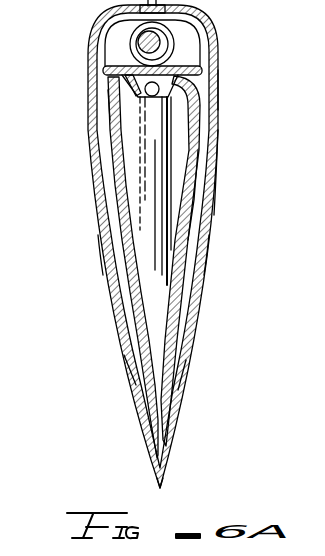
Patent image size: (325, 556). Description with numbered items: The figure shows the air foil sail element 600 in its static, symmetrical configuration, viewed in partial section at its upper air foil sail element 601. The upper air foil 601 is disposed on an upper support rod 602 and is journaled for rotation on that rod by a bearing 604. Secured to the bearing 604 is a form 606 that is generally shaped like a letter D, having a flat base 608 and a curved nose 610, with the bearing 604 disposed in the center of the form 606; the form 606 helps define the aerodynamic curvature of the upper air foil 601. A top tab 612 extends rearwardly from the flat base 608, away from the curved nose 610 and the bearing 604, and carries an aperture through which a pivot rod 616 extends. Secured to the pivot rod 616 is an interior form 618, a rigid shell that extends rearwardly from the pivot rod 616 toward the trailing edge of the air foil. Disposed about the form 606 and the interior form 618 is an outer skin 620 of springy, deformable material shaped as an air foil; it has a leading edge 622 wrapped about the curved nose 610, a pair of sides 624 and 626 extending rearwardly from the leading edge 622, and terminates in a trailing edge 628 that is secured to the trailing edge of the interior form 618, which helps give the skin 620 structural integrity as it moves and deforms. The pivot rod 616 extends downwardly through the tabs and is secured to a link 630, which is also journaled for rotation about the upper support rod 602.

The air foil sail element 600 is at (232, 87).
The upper air foil sail element 601 is at (196, 376).
The upper support rod 602 is at (202, 47).
The bearing 604 is at (199, 66).
The form 606 is at (104, 81).
The flat base 608 is at (201, 98).
The curved nose 610 is at (110, 14).
The top tab 612 is at (106, 101).
The pivot rod 616 is at (147, 94).
The interior form 618 is at (190, 208).
The outer skin 620 is at (230, 183).
The leading edge 622 is at (192, 8).
The side 624 is at (207, 258).
The side 626 is at (103, 252).
The trailing edge 628 is at (167, 484).
The link 630 is at (133, 370).